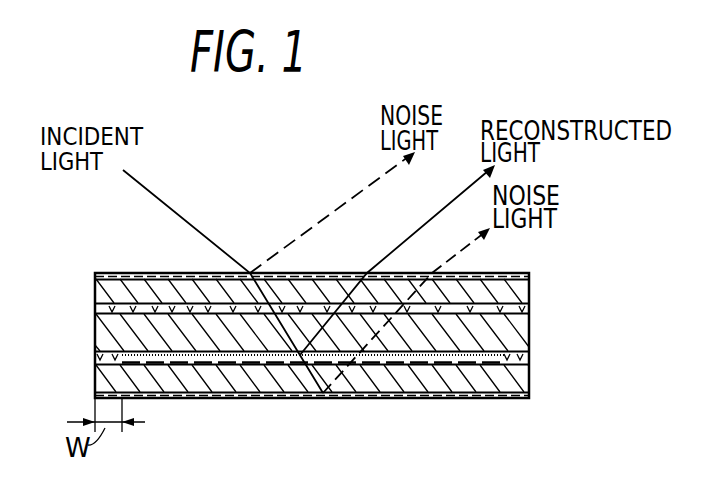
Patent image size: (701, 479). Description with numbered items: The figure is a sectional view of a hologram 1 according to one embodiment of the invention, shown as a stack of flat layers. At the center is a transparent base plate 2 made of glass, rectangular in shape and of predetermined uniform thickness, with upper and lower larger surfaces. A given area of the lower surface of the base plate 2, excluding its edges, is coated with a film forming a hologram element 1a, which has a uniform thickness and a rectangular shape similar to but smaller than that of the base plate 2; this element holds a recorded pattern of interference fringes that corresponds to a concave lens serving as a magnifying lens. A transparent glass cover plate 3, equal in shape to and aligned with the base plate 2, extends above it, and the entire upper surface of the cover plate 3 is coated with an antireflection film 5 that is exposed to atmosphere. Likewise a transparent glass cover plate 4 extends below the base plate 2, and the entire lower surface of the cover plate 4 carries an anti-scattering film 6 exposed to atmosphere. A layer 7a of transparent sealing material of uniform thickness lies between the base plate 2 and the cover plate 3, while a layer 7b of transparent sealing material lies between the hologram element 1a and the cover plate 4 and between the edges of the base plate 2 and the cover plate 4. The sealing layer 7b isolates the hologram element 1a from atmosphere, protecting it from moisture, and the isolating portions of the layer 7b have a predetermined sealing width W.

The hologram 1 is at (84, 267).
The hologram element 1a is at (529, 356).
The base plate 2 is at (529, 331).
The cover plate 3 is at (529, 296).
The cover plate 4 is at (529, 378).
The antireflection film 5 is at (529, 276).
The anti-scattering film 6 is at (529, 396).
The layer of transparent sealing material 7a is at (95, 305).
The layer of transparent sealing material 7b is at (95, 362).